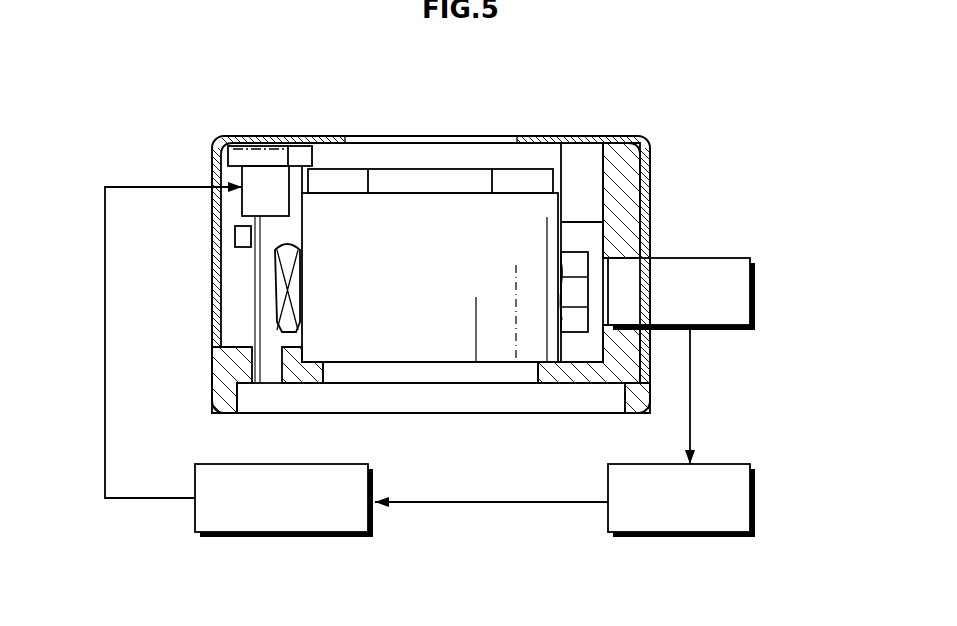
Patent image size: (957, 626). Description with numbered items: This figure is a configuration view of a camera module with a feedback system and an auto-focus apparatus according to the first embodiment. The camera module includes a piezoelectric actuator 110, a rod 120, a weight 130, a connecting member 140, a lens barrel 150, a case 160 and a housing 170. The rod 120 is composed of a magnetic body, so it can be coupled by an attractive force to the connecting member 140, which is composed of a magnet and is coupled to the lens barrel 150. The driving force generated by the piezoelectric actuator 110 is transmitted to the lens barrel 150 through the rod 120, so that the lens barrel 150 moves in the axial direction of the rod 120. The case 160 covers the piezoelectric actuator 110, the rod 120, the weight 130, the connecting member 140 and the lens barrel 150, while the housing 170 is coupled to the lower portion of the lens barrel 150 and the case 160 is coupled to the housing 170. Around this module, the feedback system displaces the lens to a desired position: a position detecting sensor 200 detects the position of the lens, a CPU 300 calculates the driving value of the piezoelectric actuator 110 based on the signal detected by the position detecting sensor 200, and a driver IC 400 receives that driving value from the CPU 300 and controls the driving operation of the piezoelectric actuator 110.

The piezoelectric actuator 110 is at (258, 204).
The rod 120 is at (263, 262).
The weight 130 is at (268, 146).
The connecting member 140 is at (278, 300).
The lens barrel 150 is at (414, 184).
The case 160 is at (588, 145).
The housing 170 is at (486, 402).
The position detecting sensor 200 is at (758, 293).
The CPU 300 is at (688, 538).
The driver IC 400 is at (284, 538).